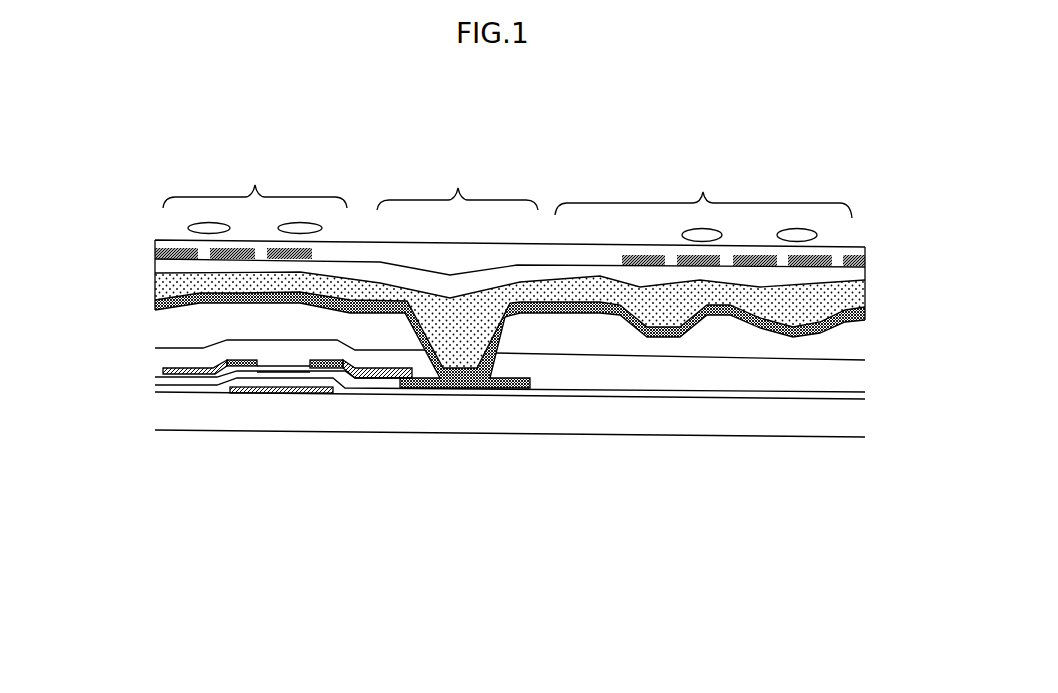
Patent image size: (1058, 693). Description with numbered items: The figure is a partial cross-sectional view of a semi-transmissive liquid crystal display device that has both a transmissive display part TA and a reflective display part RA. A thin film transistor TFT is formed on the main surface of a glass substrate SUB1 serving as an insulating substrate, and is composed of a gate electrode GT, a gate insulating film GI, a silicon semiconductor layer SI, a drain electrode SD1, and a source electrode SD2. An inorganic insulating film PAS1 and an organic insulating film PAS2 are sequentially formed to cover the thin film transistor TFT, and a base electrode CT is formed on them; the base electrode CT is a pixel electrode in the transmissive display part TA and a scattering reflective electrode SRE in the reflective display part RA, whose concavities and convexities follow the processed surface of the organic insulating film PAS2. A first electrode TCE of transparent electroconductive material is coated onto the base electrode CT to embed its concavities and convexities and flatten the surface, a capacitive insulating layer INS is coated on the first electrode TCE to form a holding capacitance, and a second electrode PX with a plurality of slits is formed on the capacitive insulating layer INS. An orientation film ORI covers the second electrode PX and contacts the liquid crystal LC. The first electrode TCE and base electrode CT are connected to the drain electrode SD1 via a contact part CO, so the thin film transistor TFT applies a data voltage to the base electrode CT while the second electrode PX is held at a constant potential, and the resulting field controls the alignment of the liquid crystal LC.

The liquid crystal LC is at (193, 226).
The second electrode PX is at (155, 247).
The capacitive insulating layer INS is at (155, 265).
The first electrode TCE is at (155, 288).
The base electrode CT is at (155, 305).
The scattering reflective electrode SRE is at (865, 313).
The organic insulating film PAS2 is at (155, 332).
The inorganic insulating film PAS1 is at (155, 364).
The thin film transistor TFT is at (248, 457).
The glass substrate SUB1 is at (155, 418).
The source electrode SD2 is at (180, 373).
The gate electrode GT is at (253, 393).
The silicon semiconductor layer SI is at (337, 372).
The drain electrode SD1 is at (377, 432).
The gate insulating film GI is at (687, 400).
The transmissive display part TA is at (255, 179).
The contact part CO is at (457, 183).
The reflective display part RA is at (703, 187).
The orientation film ORI is at (582, 238).